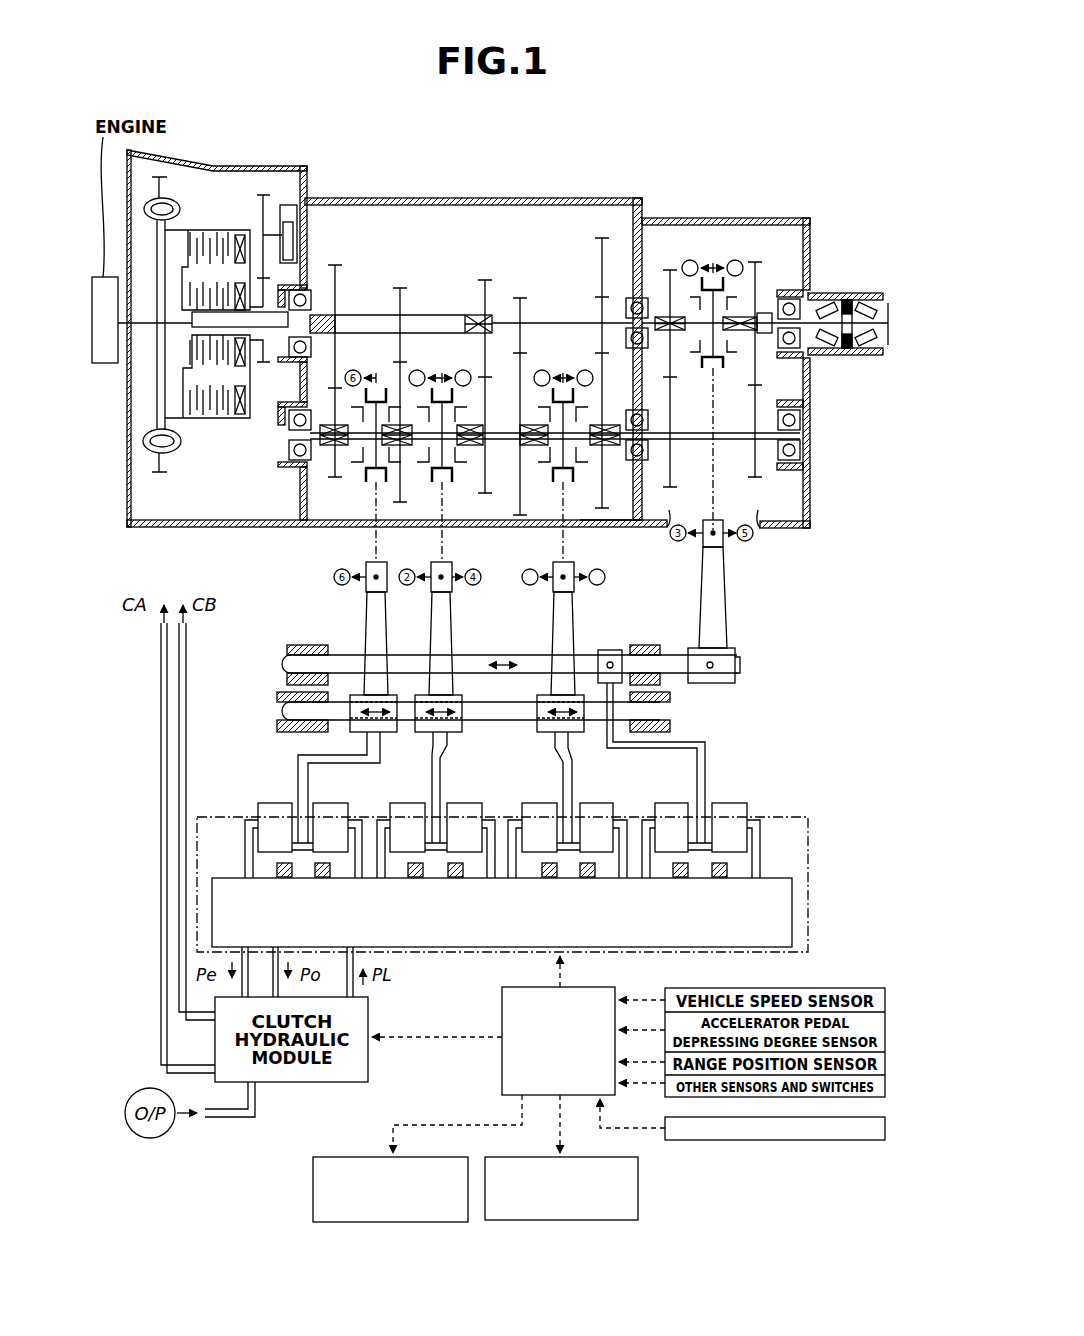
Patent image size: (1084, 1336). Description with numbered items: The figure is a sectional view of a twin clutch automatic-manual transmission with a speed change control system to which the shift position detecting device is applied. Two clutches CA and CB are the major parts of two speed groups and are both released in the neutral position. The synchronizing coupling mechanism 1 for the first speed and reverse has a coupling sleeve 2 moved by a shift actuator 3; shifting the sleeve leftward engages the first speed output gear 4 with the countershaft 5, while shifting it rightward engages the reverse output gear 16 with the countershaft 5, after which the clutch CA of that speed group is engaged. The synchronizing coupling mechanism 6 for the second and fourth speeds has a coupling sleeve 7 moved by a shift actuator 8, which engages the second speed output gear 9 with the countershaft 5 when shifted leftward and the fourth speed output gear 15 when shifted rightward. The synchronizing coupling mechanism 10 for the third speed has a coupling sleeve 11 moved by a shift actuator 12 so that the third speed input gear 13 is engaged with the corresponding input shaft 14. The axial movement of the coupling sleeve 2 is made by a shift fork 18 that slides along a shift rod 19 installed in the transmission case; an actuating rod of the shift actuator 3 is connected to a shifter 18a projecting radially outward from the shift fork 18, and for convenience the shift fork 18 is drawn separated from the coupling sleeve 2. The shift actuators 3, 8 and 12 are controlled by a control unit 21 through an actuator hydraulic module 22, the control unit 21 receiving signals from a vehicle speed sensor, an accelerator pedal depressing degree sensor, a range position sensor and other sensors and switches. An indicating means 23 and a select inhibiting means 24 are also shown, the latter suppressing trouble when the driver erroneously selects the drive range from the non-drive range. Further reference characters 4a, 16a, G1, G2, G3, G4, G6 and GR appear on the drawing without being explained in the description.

The synchronizing coupling mechanism 1 is at (568, 484).
The coupling sleeve 2 is at (555, 482).
The shift actuator 3 is at (589, 847).
The first speed output gear 4 is at (520, 516).
The dog clutch 4a is at (551, 468).
The countershaft 5 is at (736, 440).
The synchronizing coupling mechanism 6 is at (447, 484).
The coupling sleeve 7 is at (438, 486).
The shift actuator 8 is at (483, 811).
The second speed output gear 9 is at (399, 503).
The synchronizing coupling mechanism 10 is at (716, 362).
The coupling sleeve 11 is at (705, 368).
The shift actuator 12 is at (722, 808).
The third speed input gear 13 is at (667, 270).
The input shaft 14 is at (565, 322).
The fourth speed output gear 15 is at (485, 495).
The reverse output gear 16 is at (611, 523).
The reverse gear 16a is at (583, 465).
The shift fork 18 is at (576, 630).
The shifter 18a is at (575, 789).
The shift rod 19 is at (484, 702).
The control unit 21 is at (502, 1015).
The actuator hydraulic module 22 is at (792, 905).
The indicating means 23 is at (638, 1188).
The select inhibiting means 24 is at (342, 1156).
The clutch CA is at (213, 233).
The clutch CB is at (192, 356).
The first speed gear train G1 is at (520, 296).
The second speed gear train G2 is at (400, 286).
The third speed gear train G3 is at (675, 266).
The fourth speed gear train G4 is at (485, 278).
The sixth speed gear train G6 is at (336, 263).
The reverse gear train GR is at (601, 236).